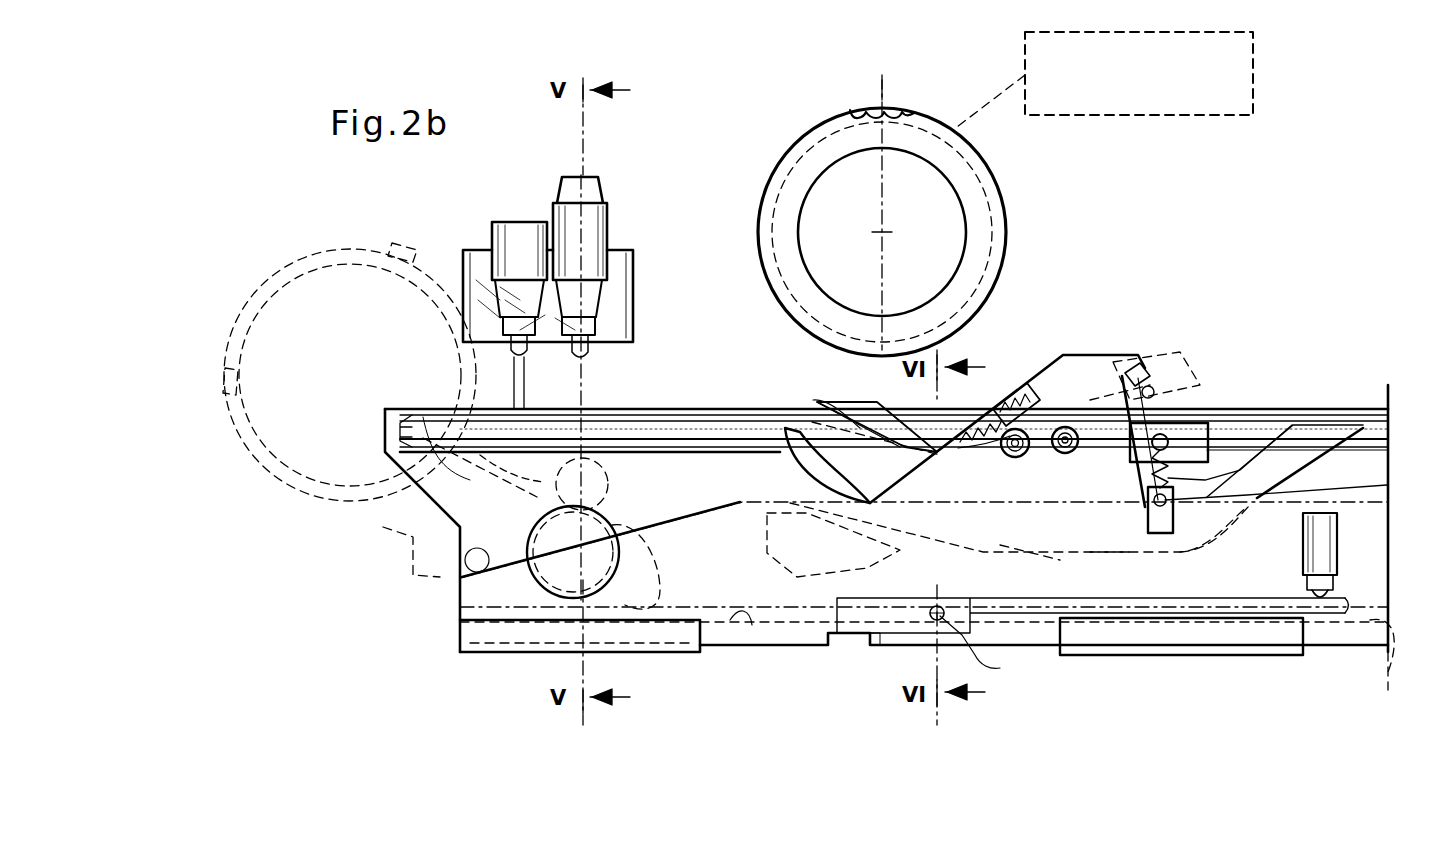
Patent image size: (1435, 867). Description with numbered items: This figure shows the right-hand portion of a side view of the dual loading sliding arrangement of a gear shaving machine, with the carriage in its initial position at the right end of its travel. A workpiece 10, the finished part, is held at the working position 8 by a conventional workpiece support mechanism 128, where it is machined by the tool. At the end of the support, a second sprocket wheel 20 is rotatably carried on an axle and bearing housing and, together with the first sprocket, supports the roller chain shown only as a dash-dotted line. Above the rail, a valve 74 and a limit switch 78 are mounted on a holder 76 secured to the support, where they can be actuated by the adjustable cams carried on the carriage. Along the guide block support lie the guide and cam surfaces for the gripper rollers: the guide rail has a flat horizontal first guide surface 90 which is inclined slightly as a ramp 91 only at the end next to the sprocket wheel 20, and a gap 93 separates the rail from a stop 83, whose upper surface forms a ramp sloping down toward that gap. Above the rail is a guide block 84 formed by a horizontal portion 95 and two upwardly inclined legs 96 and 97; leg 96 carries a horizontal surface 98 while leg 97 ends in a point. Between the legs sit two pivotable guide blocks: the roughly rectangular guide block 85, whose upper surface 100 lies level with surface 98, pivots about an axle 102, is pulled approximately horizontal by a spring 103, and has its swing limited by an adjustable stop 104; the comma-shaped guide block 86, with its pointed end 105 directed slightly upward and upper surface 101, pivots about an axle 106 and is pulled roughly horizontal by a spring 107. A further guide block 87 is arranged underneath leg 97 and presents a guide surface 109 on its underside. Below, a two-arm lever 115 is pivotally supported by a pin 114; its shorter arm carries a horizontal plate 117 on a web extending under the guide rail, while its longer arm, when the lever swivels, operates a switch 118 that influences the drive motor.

The working position 8 is at (884, 95).
The workpiece 10 is at (966, 188).
The second sprocket wheel 20 is at (612, 515).
The valve 74 is at (590, 238).
The holder 76 is at (622, 295).
The limit switch 78 is at (508, 245).
The stop 83 is at (620, 630).
The guide block 84 is at (1055, 530).
The guide block 85 is at (1198, 440).
The guide block 86 is at (865, 410).
The guide block 87 is at (790, 543).
The first guide surface 90 is at (1390, 665).
The ramp 91 is at (752, 630).
The gap 93 is at (655, 640).
The horizontal portion 95 is at (1112, 553).
The leg 96 is at (1230, 525).
The leg 97 is at (960, 550).
The horizontal surface 98 is at (1320, 415).
The upper surface 100 is at (1195, 408).
The upper surface 101 is at (888, 362).
The axle 102 is at (1065, 425).
The spring 103 is at (1232, 448).
The adjustable stop 104 is at (1140, 378).
The pointed end 105 is at (810, 395).
The axle 106 is at (1032, 420).
The spring 107 is at (980, 405).
The guide surface 109 is at (828, 580).
The pin 114 is at (1093, 640).
The two-arm lever 115 is at (1162, 600).
The horizontal plate 117 is at (880, 640).
The switch 118 is at (1320, 570).
The support mechanism 128 is at (1212, 115).